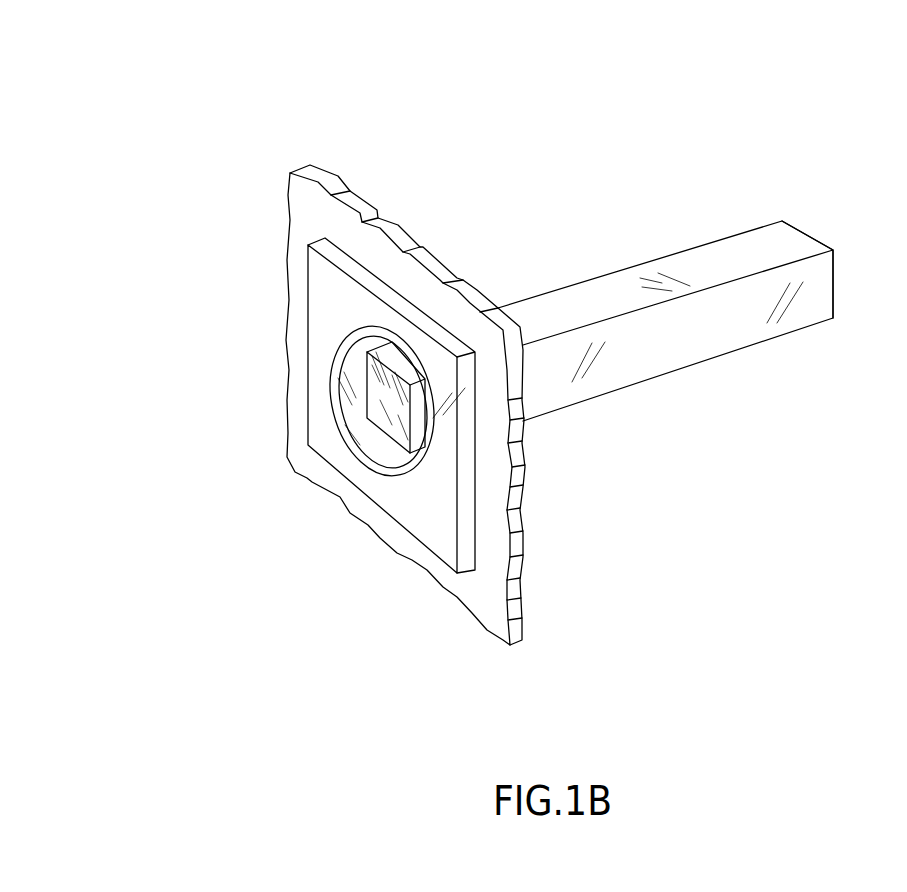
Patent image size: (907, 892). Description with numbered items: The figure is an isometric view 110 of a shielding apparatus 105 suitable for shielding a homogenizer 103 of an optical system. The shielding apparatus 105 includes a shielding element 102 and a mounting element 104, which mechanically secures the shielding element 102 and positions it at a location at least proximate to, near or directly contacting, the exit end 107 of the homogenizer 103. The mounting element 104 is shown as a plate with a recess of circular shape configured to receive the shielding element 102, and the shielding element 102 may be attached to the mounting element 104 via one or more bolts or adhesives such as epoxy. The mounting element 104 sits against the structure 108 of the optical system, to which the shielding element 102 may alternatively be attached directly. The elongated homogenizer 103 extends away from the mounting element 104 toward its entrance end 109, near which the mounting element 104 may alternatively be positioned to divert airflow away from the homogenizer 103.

The isometric view 110 is at (238, 88).
The shielding apparatus 105 is at (178, 243).
The structure 108 is at (307, 213).
The mounting element 104 is at (320, 273).
The shielding element 102 is at (358, 345).
The exit end 107 is at (366, 362).
The homogenizer 103 is at (715, 255).
The entrance end 109 is at (817, 292).